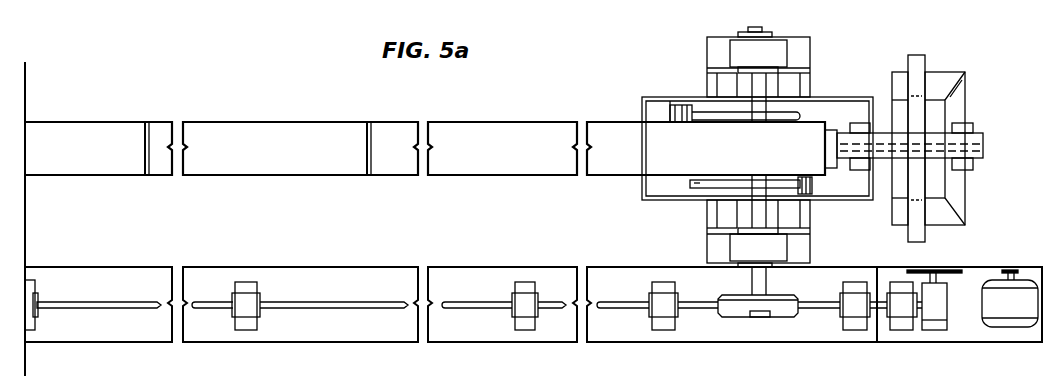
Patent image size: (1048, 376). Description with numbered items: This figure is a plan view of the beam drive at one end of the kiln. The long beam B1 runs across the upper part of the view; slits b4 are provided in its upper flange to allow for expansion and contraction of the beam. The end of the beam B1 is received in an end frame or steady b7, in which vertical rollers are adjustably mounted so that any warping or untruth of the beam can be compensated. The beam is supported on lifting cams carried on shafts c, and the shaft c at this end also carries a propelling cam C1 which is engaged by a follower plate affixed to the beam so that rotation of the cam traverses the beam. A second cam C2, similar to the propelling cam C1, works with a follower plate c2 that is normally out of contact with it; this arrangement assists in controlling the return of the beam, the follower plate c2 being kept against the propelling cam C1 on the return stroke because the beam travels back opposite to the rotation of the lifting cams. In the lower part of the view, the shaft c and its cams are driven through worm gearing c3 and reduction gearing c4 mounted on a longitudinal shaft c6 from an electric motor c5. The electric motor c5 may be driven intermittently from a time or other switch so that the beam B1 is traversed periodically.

The beam B1 is at (425, 148).
The slits b4 is at (147, 122).
The end frame b7 is at (955, 100).
The shaft c is at (760, 286).
The follower plate c2 is at (676, 105).
The second cam C2 is at (700, 116).
The propelling cam C1 is at (693, 188).
The worm gearing c3 is at (782, 308).
The reduction gearing c4 is at (930, 316).
The electric motor c5 is at (998, 320).
The shaft c6 is at (305, 308).